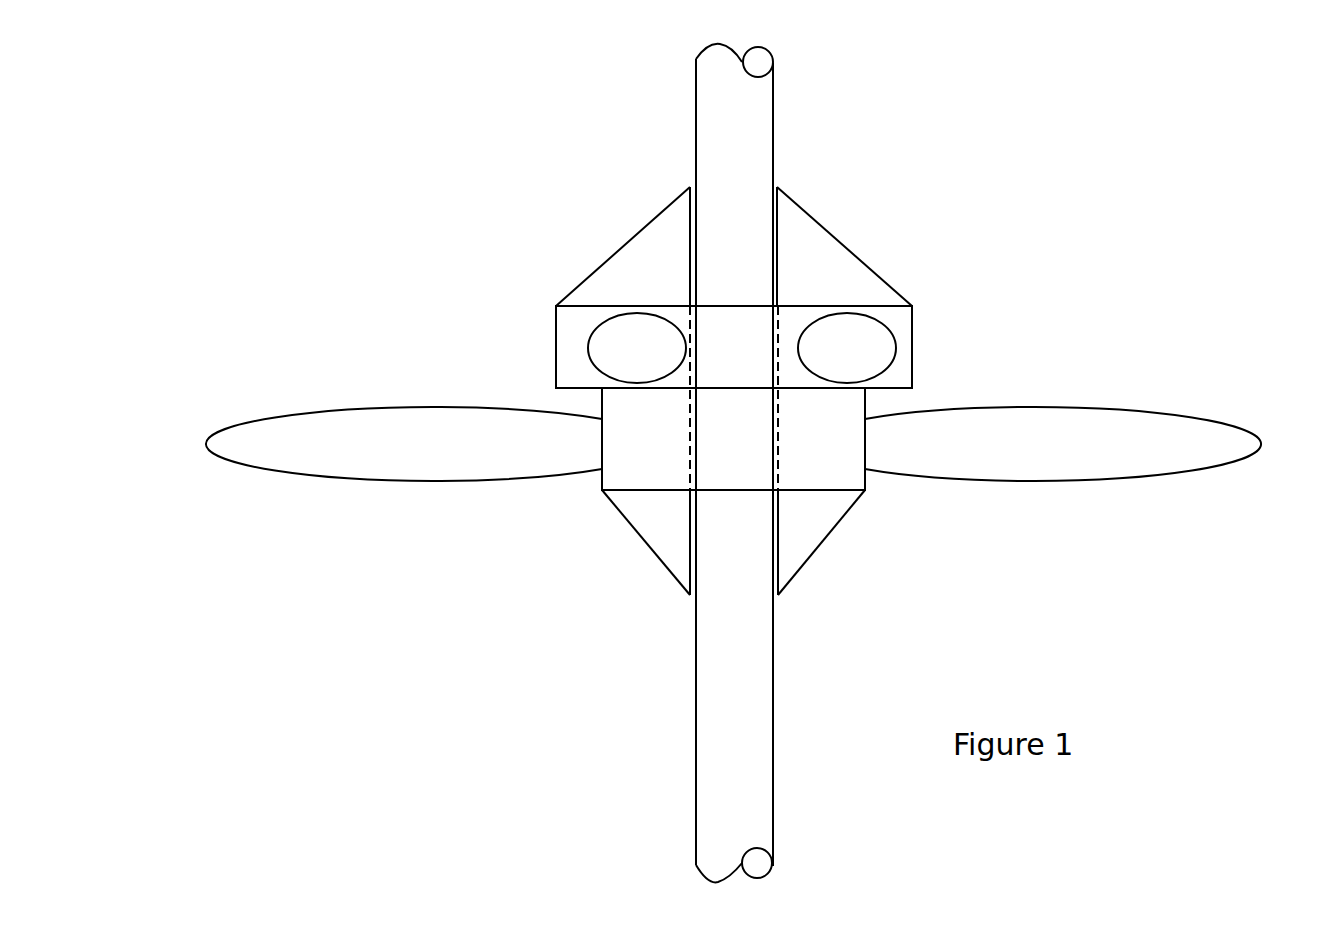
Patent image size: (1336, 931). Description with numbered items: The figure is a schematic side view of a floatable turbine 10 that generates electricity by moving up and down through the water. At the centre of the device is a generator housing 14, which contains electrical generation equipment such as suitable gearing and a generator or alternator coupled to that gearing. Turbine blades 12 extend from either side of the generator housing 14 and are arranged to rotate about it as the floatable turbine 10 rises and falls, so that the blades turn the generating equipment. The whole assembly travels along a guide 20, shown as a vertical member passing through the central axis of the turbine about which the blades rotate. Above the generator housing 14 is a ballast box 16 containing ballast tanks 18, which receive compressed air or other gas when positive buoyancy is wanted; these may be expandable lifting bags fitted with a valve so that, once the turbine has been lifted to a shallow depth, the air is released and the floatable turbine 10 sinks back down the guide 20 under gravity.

The floatable turbine 10 is at (477, 350).
The turbine blades 12 is at (429, 460).
The generator housing 14 is at (648, 475).
The ballast box 16 is at (895, 322).
The ballast tanks 18 is at (848, 323).
The guide 20 is at (758, 146).